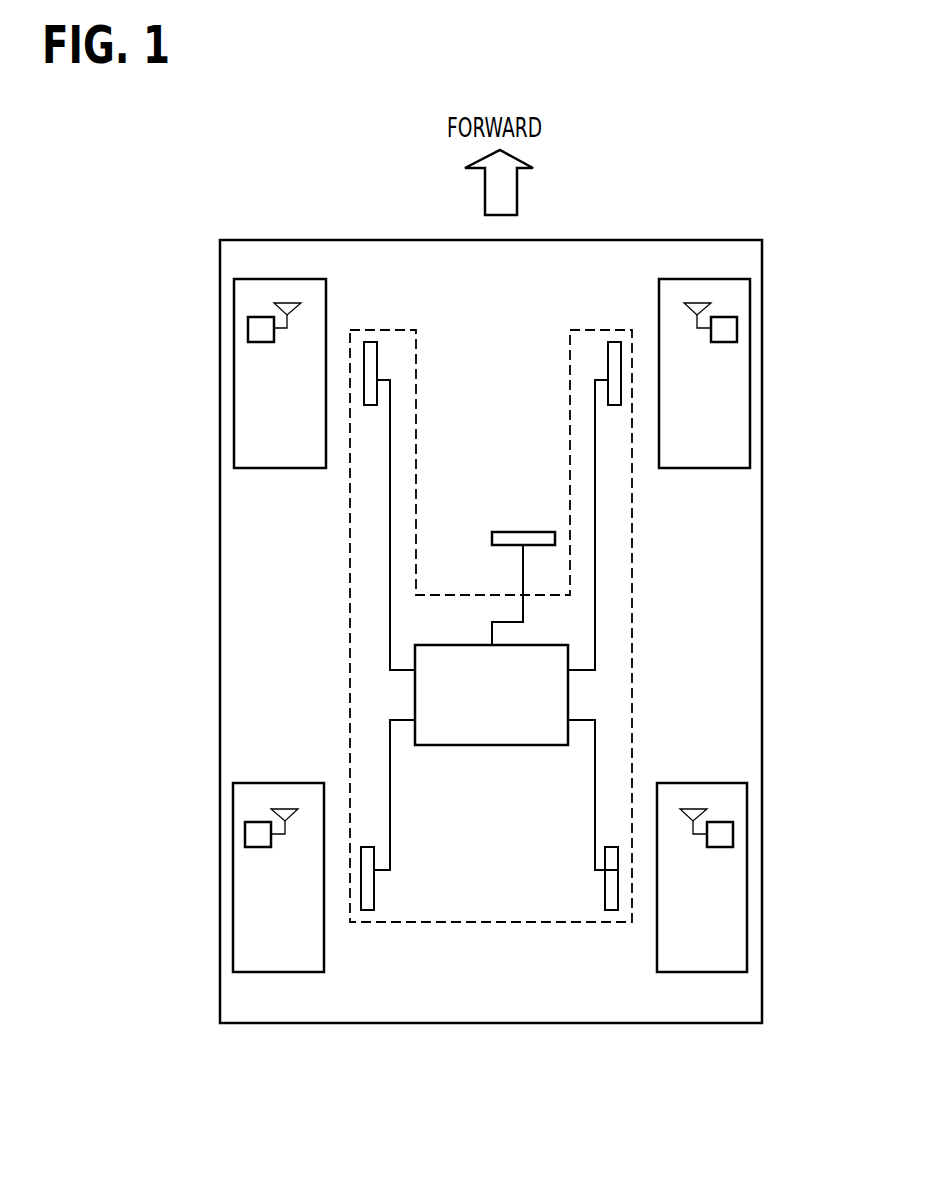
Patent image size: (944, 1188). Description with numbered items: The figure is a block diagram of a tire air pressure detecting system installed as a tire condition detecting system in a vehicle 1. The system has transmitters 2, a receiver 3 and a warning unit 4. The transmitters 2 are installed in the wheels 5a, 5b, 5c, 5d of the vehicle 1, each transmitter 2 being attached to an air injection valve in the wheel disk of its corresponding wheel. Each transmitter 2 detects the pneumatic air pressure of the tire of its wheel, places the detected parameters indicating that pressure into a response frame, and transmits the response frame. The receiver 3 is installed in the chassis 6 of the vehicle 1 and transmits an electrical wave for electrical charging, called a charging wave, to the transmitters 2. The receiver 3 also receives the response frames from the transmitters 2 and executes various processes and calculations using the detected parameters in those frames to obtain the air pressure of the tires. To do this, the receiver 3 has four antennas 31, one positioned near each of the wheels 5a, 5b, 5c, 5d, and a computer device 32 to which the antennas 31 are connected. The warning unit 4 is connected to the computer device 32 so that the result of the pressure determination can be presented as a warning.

The vehicle 1 is at (764, 627).
The transmitter 2 is at (248, 326).
The receiver 3 is at (490, 925).
The warning unit 4 is at (535, 531).
The wheel 5a is at (750, 413).
The wheel 5b is at (235, 403).
The wheel 5c is at (747, 912).
The wheel 5d is at (233, 906).
The chassis 6 is at (762, 553).
The antenna 31 is at (370, 342).
The computer device 32 is at (470, 645).